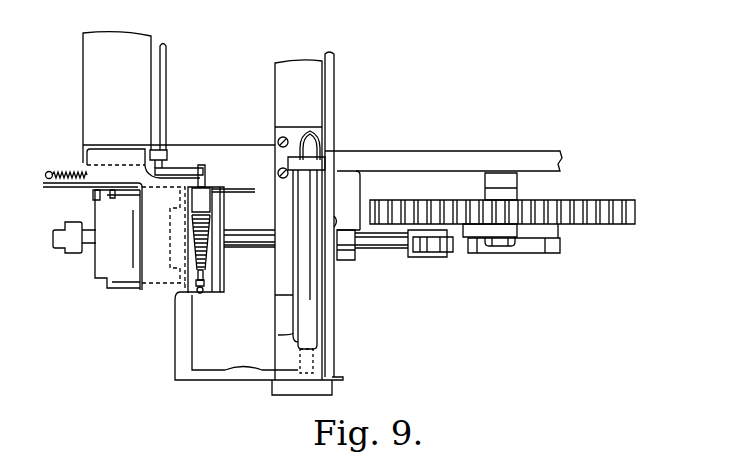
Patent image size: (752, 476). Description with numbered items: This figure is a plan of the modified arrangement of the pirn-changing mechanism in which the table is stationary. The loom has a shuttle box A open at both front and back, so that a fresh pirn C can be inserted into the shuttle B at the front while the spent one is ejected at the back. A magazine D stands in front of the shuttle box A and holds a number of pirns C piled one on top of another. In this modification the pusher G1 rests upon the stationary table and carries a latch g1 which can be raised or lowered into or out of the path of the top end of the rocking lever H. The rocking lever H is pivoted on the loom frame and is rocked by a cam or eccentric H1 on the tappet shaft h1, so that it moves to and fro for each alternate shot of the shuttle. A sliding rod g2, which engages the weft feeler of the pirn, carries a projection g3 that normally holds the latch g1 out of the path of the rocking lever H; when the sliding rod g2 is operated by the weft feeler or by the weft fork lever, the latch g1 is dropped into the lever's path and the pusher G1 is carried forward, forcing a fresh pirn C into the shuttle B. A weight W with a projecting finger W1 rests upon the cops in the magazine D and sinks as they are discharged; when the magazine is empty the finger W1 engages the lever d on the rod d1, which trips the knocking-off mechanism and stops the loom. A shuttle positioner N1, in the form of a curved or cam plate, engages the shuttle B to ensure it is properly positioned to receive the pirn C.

The shuttle box A is at (306, 216).
The shuttle B is at (293, 340).
The pirn C is at (210, 228).
The magazine D is at (212, 288).
The pusher G1 is at (163, 238).
The latch g1 is at (117, 240).
The sliding rod g2 is at (156, 236).
The projection g3 is at (93, 193).
The rocking lever H is at (64, 254).
The cam or eccentric H1 is at (530, 242).
The shuttle positioner N1 is at (233, 377).
The weight W is at (201, 201).
The projecting finger W1 is at (205, 176).
The lever d is at (182, 170).
The rod d1 is at (166, 108).
The tappet shaft h1 is at (503, 197).